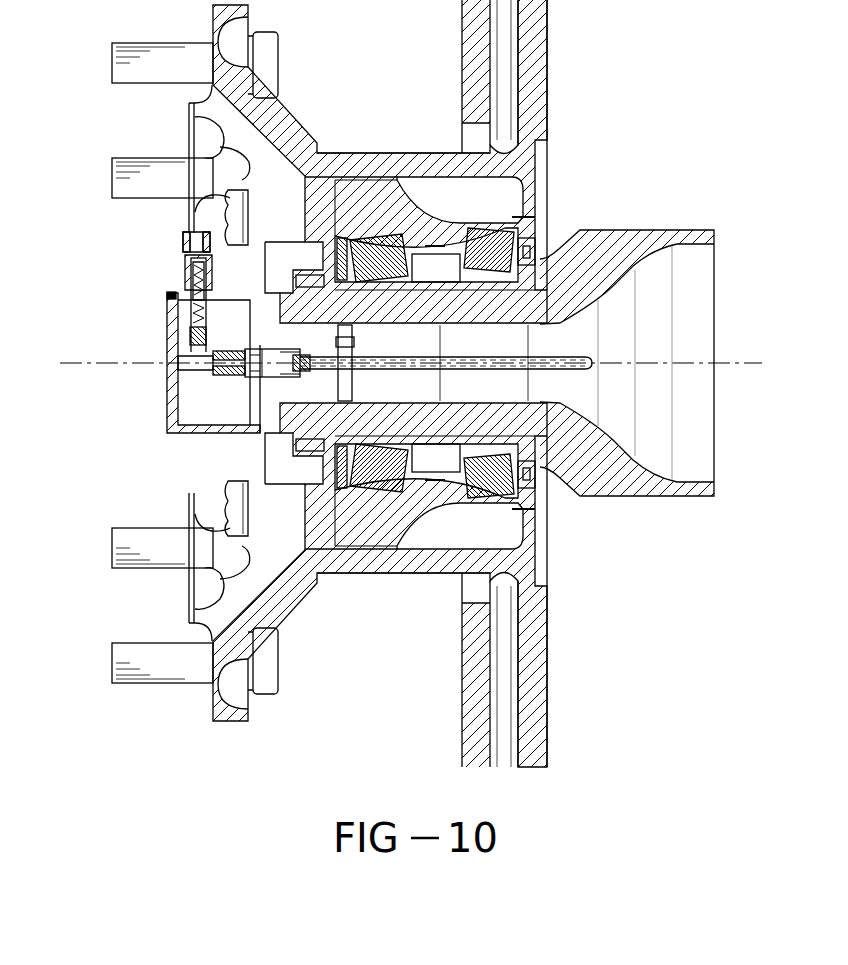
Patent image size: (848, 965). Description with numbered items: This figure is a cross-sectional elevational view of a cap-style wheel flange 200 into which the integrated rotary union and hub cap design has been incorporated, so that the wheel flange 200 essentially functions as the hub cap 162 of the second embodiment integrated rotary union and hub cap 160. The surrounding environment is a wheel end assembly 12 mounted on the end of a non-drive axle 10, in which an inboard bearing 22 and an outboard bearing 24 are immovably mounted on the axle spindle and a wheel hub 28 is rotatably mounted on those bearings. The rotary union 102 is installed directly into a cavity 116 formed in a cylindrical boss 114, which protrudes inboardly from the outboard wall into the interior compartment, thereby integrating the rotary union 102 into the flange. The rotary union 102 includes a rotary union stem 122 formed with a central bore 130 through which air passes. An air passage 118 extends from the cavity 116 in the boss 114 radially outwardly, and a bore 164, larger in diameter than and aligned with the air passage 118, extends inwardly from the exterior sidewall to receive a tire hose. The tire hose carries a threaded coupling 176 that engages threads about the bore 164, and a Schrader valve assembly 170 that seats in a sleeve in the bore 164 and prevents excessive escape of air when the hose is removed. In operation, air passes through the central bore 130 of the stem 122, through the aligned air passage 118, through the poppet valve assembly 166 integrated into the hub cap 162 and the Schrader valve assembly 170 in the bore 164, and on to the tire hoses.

The cap-style wheel flange 200 is at (77, 97).
The wheel end assembly 12 is at (553, 79).
The wheel hub 28 is at (548, 173).
The axle 10 is at (680, 226).
The inboard bearing 22 is at (478, 252).
The outboard bearing 24 is at (386, 250).
The rotary union 102 is at (248, 338).
The central bore 130 is at (308, 360).
The cavity 116 is at (238, 346).
The rotary union stem 122 is at (250, 377).
The cylindrical boss 114 is at (212, 378).
The air passage 118 is at (182, 363).
The second embodiment integrated rotary union and hub cap 160 is at (158, 329).
The hub cap 162 is at (172, 422).
The bore 164 is at (197, 276).
The poppet valve assembly 166 is at (186, 328).
The Schrader valve assembly 170 is at (174, 297).
The threaded coupling 176 is at (183, 244).